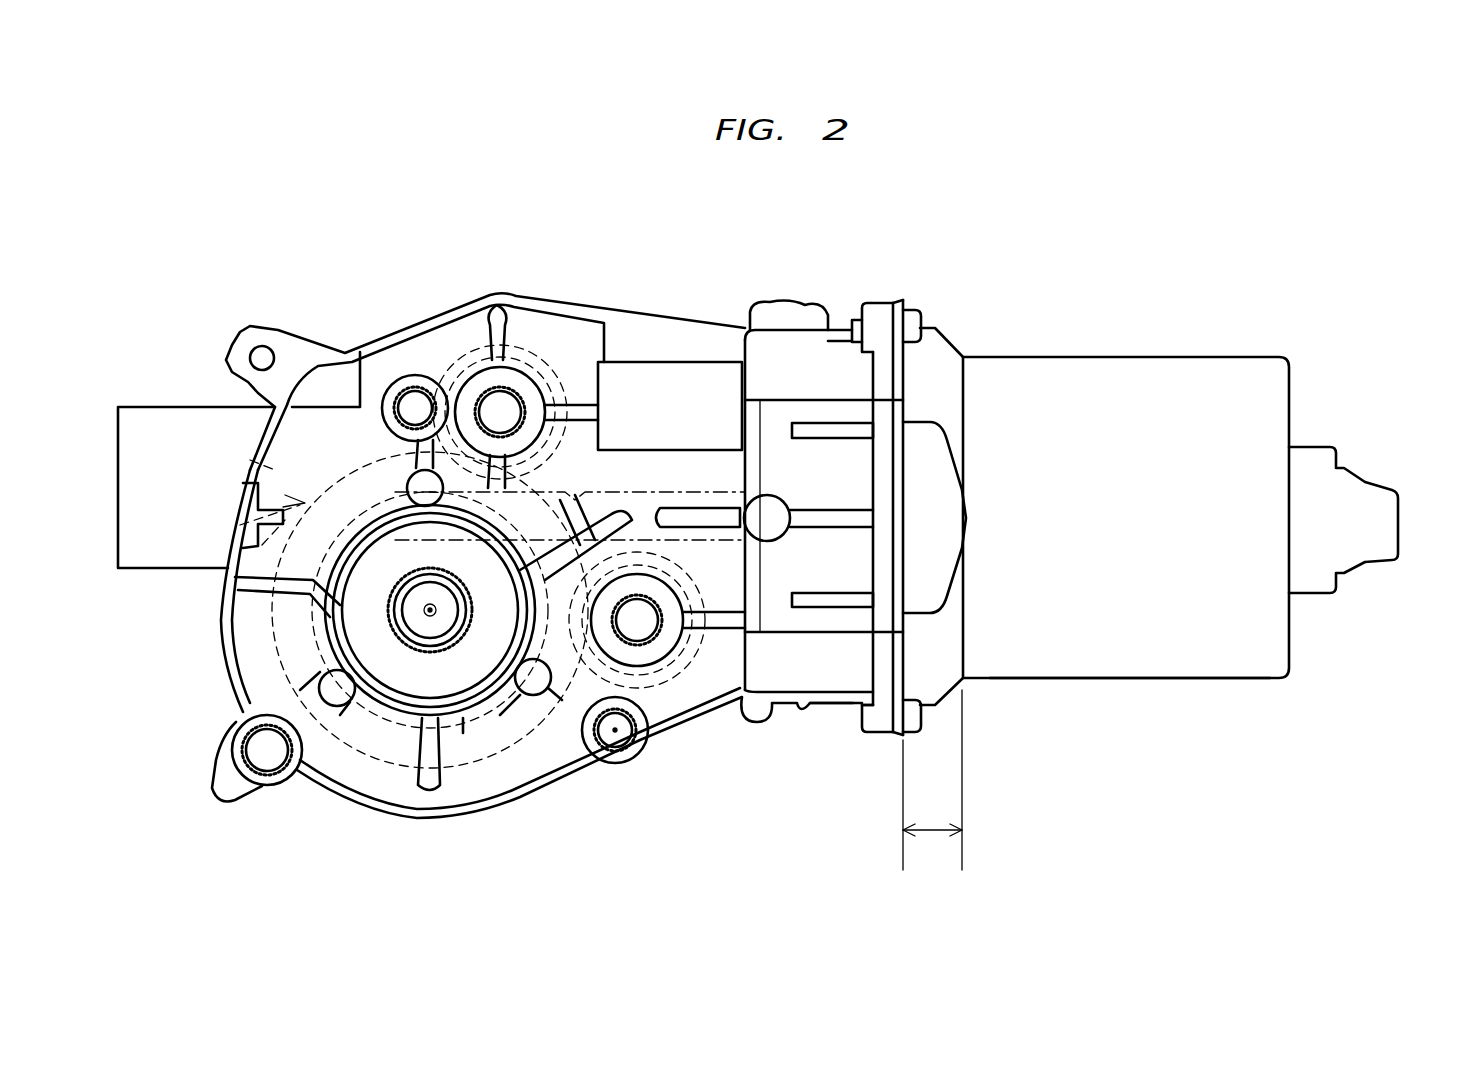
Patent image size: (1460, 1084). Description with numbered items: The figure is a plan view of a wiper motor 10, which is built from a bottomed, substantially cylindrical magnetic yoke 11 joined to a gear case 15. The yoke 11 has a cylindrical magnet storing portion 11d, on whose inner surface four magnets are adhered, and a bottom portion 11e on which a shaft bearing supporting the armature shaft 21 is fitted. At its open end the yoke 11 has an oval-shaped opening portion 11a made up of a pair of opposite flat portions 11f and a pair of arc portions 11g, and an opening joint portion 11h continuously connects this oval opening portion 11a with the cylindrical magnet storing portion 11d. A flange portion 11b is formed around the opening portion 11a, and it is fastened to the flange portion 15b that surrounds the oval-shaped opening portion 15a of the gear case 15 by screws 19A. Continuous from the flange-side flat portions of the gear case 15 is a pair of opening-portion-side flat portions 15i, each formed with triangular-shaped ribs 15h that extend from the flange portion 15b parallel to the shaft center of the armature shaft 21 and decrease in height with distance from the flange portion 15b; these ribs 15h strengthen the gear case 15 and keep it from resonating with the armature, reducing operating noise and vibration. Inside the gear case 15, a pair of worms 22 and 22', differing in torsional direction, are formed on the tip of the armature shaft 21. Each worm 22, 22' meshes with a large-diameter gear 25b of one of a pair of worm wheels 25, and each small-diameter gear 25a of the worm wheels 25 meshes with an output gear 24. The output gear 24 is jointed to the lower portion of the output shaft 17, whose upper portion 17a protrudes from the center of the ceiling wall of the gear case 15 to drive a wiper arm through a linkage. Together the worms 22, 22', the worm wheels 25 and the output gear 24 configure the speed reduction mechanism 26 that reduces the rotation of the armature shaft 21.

The wiper motor 10 is at (775, 768).
The magnetic yoke 11 is at (1188, 353).
The opening portion 11a is at (890, 335).
The flange portion 11b is at (898, 335).
The magnet storing portion 11d is at (1188, 655).
The bottom portion 11e is at (1340, 470).
The flat portion 11f is at (928, 560).
The arc portion 11g is at (962, 362).
The opening joint portion 11h is at (932, 795).
The gear case 15 is at (730, 335).
The opening portion 15a is at (905, 650).
The flange portion 15b is at (884, 715).
The rib 15h is at (833, 600).
The opening-portion-side flat portion 15i is at (810, 440).
The output shaft 17 is at (400, 660).
The upper portion 17a is at (430, 625).
The screw 19A is at (920, 335).
The armature shaft 21 is at (660, 490).
The worm 22 is at (487, 524).
The worm 22' is at (680, 400).
The output gear 24 is at (440, 650).
The worm wheel 25 is at (462, 325).
The small-diameter gear 25a is at (528, 325).
The large-diameter gear 25b is at (565, 335).
The speed reduction mechanism 26 is at (260, 455).